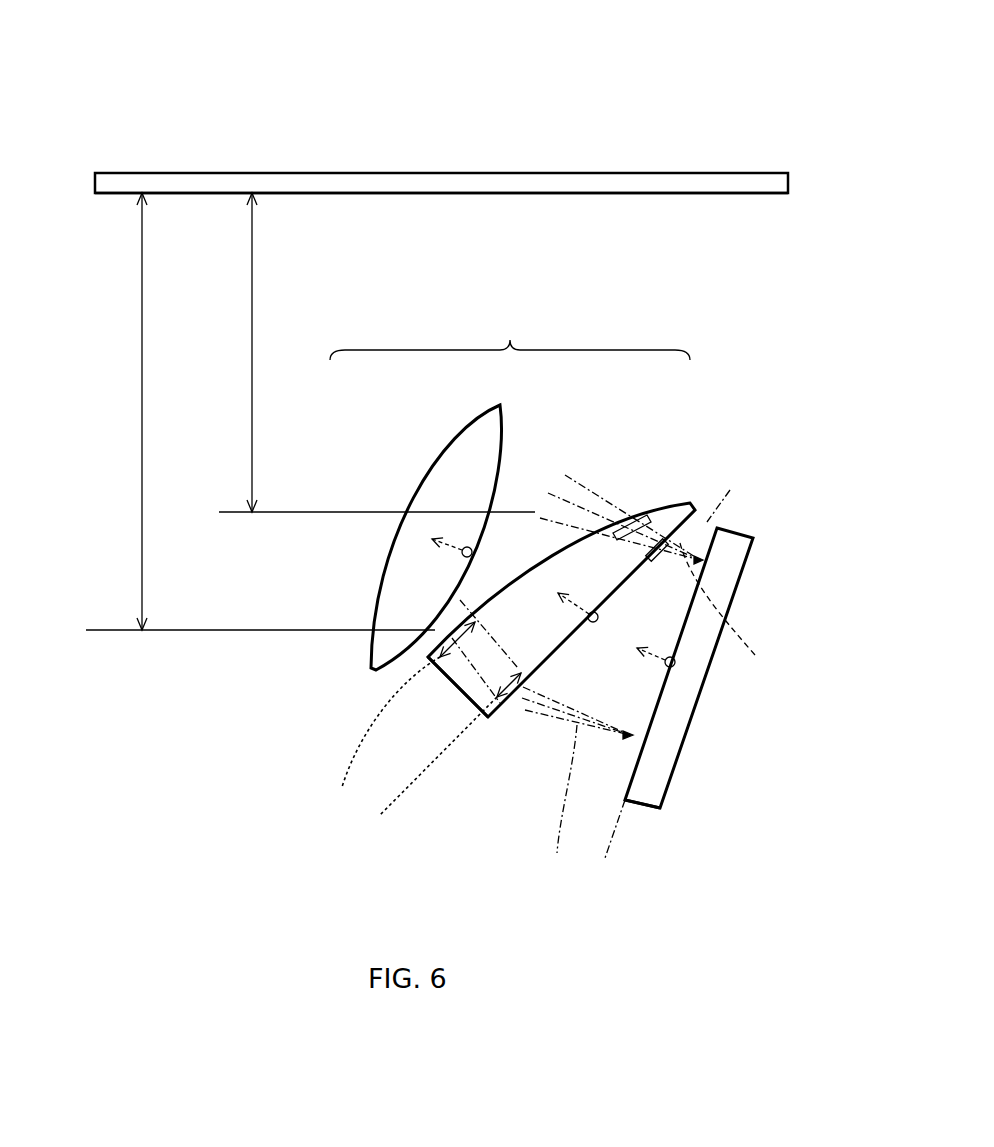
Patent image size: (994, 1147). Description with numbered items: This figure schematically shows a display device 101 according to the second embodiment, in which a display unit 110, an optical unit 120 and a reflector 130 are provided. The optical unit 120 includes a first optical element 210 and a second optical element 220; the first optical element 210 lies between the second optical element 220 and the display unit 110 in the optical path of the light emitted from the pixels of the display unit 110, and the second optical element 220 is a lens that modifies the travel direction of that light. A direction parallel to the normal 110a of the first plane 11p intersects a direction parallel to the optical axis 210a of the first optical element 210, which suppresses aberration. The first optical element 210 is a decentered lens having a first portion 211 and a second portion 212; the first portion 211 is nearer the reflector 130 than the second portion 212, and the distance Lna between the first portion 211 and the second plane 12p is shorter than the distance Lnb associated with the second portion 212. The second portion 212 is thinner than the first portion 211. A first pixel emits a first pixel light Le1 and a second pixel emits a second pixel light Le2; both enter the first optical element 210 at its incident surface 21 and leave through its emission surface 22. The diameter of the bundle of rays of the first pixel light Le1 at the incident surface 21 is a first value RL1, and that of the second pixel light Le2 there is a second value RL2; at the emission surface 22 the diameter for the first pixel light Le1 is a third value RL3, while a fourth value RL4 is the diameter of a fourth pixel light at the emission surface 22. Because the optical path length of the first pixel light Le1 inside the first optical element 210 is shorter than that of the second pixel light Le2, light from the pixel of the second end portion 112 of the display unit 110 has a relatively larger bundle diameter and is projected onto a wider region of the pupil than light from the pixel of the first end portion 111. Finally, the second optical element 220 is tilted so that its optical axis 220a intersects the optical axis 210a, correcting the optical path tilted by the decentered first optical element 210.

The display device 101 is at (602, 88).
The reflector 130 is at (95, 185).
The second plane 12p is at (677, 192).
The distance Lna is at (365, 352).
The distance Lnb is at (260, 411).
The optical unit 120 is at (510, 333).
The second optical element 220 is at (502, 430).
The optical axis 220a is at (461, 546).
The first optical element 210 is at (697, 500).
The optical axis 210a is at (588, 620).
The first portion 211 is at (653, 530).
The emission surface 22 is at (663, 532).
The incident surface 21 is at (698, 522).
The third value RL3 is at (633, 513).
The first value RL1 is at (653, 558).
The first pixel light Le1 is at (745, 611).
The display unit 110 is at (750, 552).
The first end portion 111 is at (727, 533).
The normal 110a is at (666, 668).
The second end portion 112 is at (627, 803).
The first plane 11p is at (617, 820).
The second portion 212 is at (478, 683).
The fourth value RL4 is at (435, 640).
The second value RL2 is at (523, 697).
The second pixel light Le2 is at (548, 810).